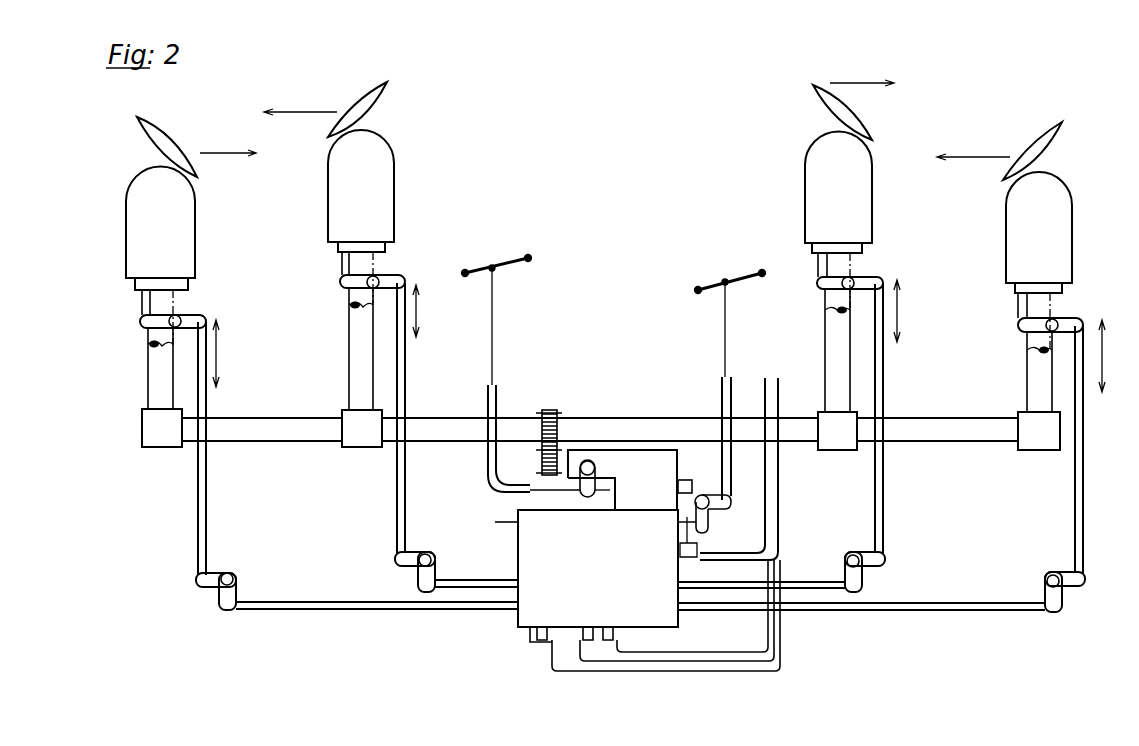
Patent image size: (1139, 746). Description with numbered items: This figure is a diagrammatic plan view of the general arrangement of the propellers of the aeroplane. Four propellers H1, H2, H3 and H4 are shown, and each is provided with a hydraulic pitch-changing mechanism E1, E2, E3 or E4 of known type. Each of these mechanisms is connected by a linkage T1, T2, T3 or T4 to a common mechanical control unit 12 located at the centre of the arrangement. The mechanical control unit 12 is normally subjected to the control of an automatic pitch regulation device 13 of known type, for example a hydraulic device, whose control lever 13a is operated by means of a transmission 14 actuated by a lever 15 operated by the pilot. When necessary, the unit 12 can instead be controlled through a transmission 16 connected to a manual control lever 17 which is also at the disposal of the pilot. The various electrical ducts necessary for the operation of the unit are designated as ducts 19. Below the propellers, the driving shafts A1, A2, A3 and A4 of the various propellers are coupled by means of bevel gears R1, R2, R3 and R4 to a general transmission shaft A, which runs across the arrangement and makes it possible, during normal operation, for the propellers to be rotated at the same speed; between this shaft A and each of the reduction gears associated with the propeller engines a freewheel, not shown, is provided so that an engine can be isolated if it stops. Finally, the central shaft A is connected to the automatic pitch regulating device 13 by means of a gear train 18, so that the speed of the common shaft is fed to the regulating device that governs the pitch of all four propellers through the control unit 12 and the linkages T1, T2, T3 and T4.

The propeller H1 is at (158, 138).
The propeller H2 is at (362, 102).
The propeller H3 is at (848, 117).
The propeller H4 is at (1045, 138).
The hydraulic pitch-changing mechanism E1 is at (166, 256).
The hydraulic pitch-changing mechanism E2 is at (366, 217).
The hydraulic pitch-changing mechanism E3 is at (844, 220).
The hydraulic pitch-changing mechanism E4 is at (1044, 261).
The driving shaft A1 is at (160, 370).
The driving shaft A2 is at (358, 377).
The driving shaft A3 is at (828, 378).
The driving shaft A4 is at (1037, 380).
The bevel gears R1 is at (152, 430).
The bevel gears R2 is at (355, 445).
The bevel gears R3 is at (832, 445).
The bevel gears R4 is at (1030, 442).
The linkage T1 is at (205, 355).
The linkage T2 is at (397, 358).
The linkage T3 is at (878, 363).
The linkage T4 is at (1080, 360).
The general transmission shaft A is at (437, 435).
The mechanical control unit 12 is at (586, 576).
The automatic pitch regulation device 13 is at (649, 503).
The control lever 13a is at (610, 490).
The transmission 14 is at (488, 400).
The lever 15 is at (505, 263).
The transmission 16 is at (726, 460).
The manual control lever 17 is at (740, 285).
The gear train 18 is at (547, 410).
The electrical ducts 19 is at (775, 507).